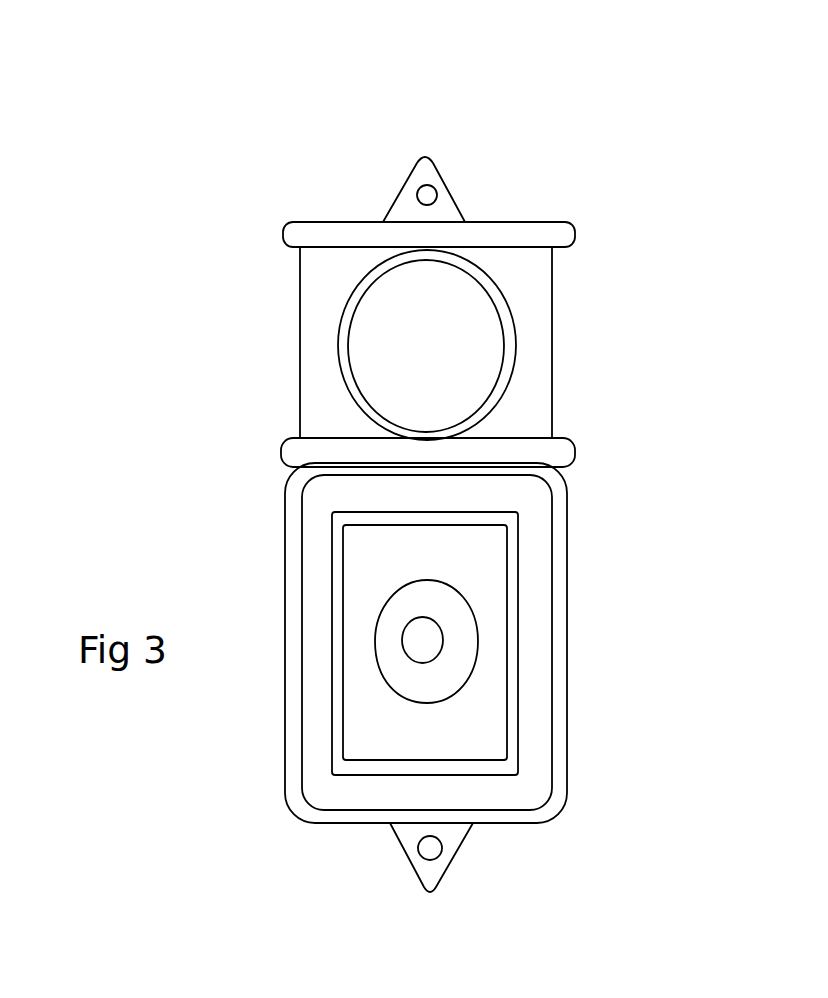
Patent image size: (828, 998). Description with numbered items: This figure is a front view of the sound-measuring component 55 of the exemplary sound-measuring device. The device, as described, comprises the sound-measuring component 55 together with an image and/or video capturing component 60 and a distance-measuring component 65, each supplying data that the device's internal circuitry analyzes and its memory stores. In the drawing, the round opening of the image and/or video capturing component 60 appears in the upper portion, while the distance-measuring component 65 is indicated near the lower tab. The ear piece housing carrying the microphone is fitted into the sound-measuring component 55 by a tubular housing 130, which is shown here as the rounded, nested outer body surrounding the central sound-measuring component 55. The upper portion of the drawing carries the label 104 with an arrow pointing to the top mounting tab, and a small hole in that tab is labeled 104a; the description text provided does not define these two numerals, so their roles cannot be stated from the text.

The lamp housing / main body 104 is at (427, 147).
The upper mounting hole 104a is at (440, 196).
The image and/or video capturing component 60 is at (443, 357).
The tubular housing 130 is at (567, 712).
The sound-measuring component 55 is at (470, 625).
The distance-measuring component 65 is at (430, 860).